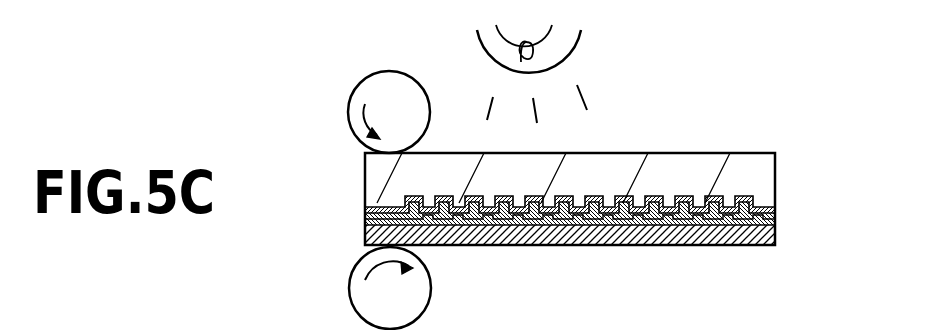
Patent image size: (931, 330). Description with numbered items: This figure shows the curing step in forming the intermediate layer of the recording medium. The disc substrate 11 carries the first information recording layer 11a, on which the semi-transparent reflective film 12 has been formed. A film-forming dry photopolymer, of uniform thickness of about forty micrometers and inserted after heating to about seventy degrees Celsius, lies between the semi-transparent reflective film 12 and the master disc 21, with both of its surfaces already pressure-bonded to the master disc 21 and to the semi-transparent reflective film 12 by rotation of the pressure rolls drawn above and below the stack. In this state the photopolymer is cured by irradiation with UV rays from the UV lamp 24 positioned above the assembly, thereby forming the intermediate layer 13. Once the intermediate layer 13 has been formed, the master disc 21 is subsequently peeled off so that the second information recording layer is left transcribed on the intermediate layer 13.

The UV lamp 24 is at (579, 48).
The disc substrate 11 is at (768, 172).
The first information recording layer 11a is at (680, 196).
The semi-transparent reflective film 12 is at (772, 208).
The intermediate layer 13 is at (777, 218).
The master disc 21 is at (777, 237).